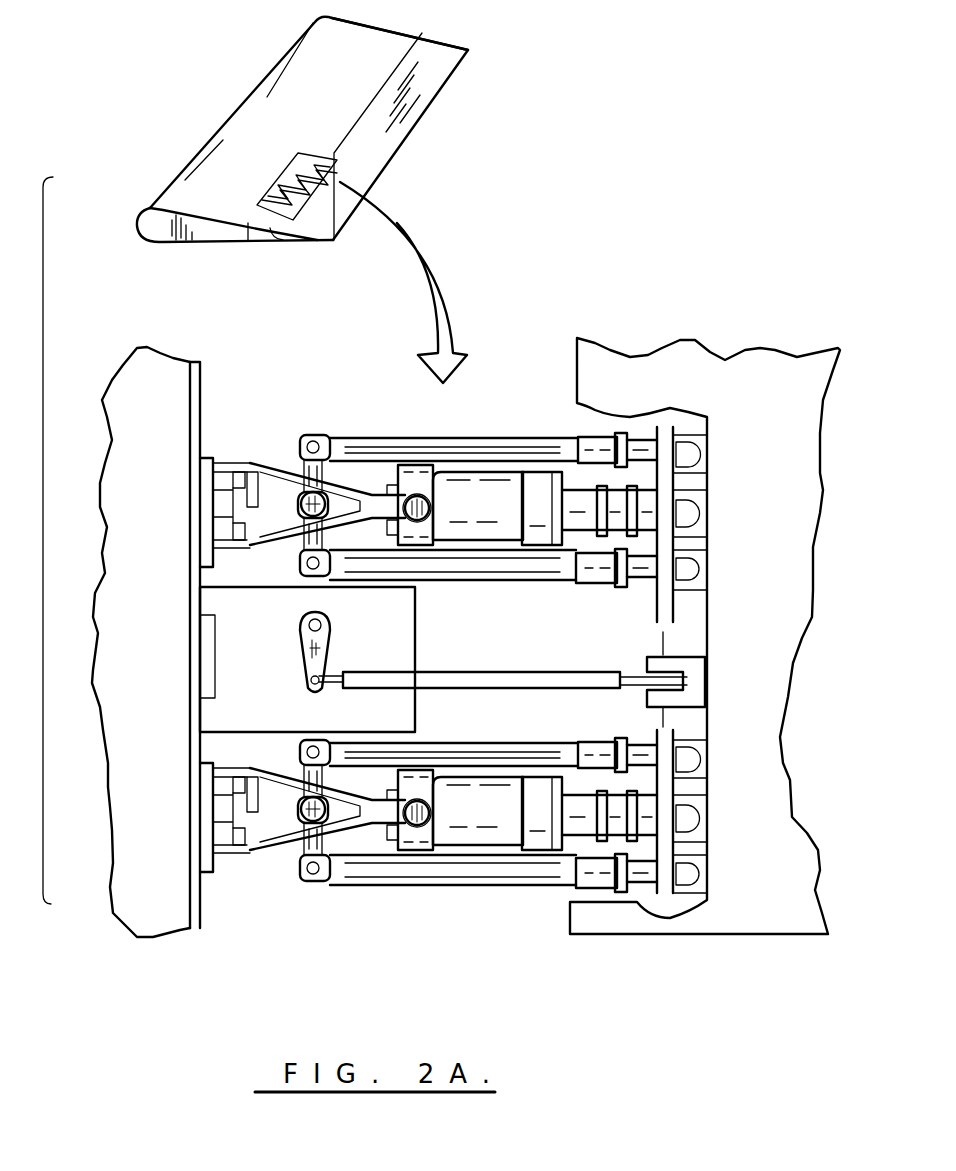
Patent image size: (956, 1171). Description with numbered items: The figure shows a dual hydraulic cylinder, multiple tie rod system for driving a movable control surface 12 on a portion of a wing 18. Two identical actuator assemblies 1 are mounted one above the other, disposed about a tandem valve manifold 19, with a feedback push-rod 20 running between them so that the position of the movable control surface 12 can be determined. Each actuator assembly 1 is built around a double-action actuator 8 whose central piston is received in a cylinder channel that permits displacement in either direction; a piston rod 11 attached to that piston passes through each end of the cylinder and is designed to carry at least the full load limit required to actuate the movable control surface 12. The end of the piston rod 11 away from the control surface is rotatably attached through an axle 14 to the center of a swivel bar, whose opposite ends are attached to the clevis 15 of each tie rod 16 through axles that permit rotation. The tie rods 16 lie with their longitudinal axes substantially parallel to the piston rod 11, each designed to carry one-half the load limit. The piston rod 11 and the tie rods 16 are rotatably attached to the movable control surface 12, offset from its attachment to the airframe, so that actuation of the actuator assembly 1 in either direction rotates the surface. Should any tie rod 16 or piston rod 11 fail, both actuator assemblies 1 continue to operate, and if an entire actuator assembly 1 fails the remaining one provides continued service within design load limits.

The actuator assembly 1 is at (526, 395).
The actuator 8 is at (470, 542).
The piston rod 11 is at (568, 518).
The movable control surface 12 is at (422, 120).
The axle 14 is at (298, 483).
The clevis 15 is at (312, 435).
The tie rod 16 is at (458, 438).
The wing 18 is at (270, 71).
The tandem valve manifold 19 is at (205, 602).
The feedback push-rod 20 is at (462, 672).